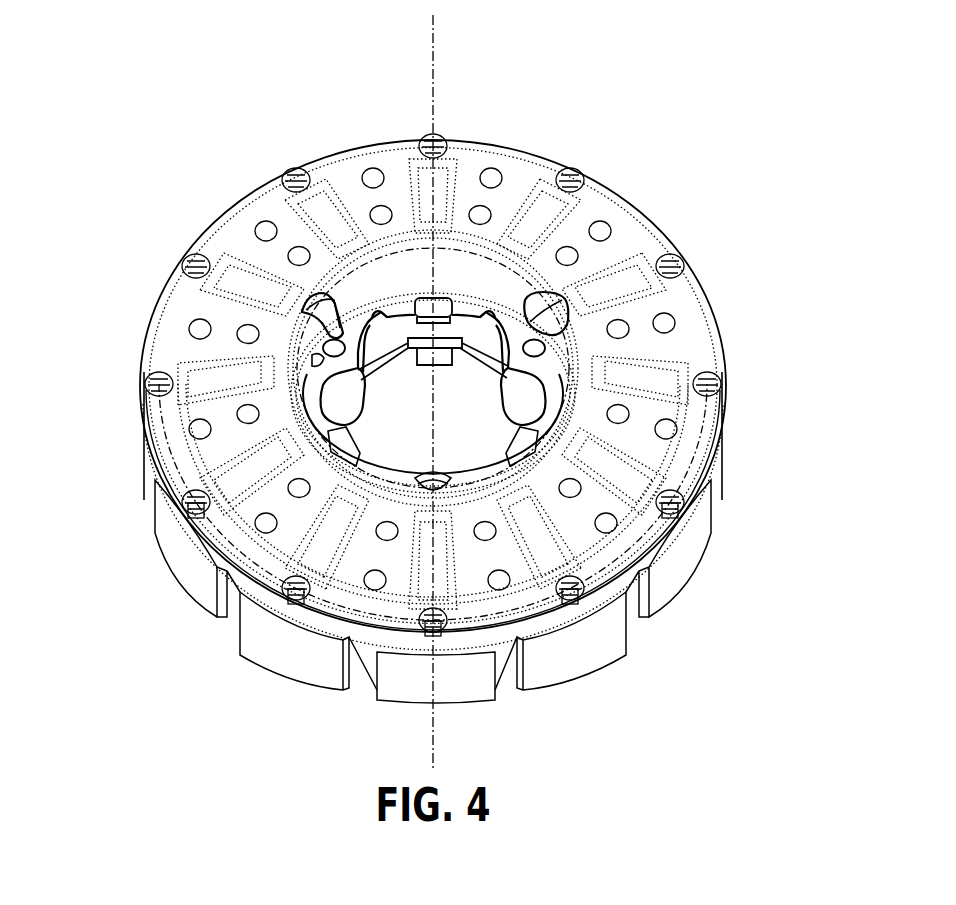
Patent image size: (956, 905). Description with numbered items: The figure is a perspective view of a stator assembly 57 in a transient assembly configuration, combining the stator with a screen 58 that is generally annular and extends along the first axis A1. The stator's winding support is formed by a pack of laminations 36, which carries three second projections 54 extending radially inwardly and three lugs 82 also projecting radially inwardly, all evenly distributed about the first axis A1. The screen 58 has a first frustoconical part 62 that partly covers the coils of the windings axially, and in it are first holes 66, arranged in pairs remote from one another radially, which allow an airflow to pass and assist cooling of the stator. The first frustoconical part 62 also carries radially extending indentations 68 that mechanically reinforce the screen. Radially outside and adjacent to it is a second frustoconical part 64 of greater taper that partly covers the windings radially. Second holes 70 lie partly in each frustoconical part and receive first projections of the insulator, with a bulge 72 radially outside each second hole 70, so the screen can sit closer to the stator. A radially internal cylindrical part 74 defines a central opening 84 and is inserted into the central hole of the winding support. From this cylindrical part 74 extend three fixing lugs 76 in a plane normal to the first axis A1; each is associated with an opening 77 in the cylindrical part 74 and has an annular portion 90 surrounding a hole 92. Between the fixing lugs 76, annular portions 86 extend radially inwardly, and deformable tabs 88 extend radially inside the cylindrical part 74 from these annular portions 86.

The first axis A1 is at (430, 48).
The pack of laminations 36 is at (435, 318).
The second projections 54 is at (342, 392).
The stator assembly 57 is at (709, 117).
The screen 58 is at (662, 302).
The first frustoconical part 62 is at (337, 180).
The second frustoconical part 64 is at (173, 492).
The first holes 66 is at (292, 245).
The indentations 68 is at (618, 280).
The second holes 70 is at (186, 535).
The bulge 72 is at (186, 521).
The cylindrical part 74 is at (452, 275).
The fixing lugs 76 is at (306, 353).
The opening 77 is at (219, 247).
The lugs 82 is at (440, 308).
The central opening 84 is at (461, 421).
The annular portions 86 is at (301, 203).
The tabs 88 is at (398, 312).
The annular portion 90 is at (302, 306).
The hole 92 is at (332, 348).